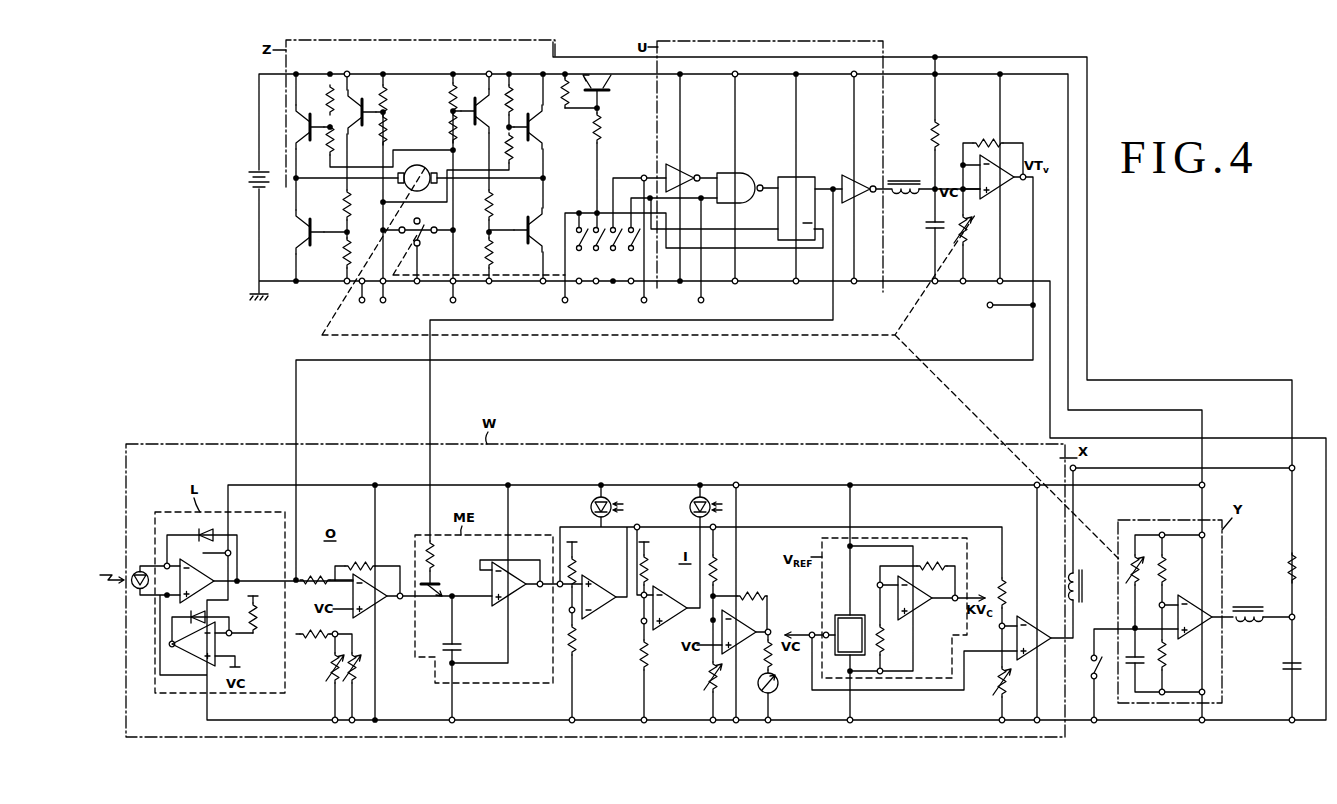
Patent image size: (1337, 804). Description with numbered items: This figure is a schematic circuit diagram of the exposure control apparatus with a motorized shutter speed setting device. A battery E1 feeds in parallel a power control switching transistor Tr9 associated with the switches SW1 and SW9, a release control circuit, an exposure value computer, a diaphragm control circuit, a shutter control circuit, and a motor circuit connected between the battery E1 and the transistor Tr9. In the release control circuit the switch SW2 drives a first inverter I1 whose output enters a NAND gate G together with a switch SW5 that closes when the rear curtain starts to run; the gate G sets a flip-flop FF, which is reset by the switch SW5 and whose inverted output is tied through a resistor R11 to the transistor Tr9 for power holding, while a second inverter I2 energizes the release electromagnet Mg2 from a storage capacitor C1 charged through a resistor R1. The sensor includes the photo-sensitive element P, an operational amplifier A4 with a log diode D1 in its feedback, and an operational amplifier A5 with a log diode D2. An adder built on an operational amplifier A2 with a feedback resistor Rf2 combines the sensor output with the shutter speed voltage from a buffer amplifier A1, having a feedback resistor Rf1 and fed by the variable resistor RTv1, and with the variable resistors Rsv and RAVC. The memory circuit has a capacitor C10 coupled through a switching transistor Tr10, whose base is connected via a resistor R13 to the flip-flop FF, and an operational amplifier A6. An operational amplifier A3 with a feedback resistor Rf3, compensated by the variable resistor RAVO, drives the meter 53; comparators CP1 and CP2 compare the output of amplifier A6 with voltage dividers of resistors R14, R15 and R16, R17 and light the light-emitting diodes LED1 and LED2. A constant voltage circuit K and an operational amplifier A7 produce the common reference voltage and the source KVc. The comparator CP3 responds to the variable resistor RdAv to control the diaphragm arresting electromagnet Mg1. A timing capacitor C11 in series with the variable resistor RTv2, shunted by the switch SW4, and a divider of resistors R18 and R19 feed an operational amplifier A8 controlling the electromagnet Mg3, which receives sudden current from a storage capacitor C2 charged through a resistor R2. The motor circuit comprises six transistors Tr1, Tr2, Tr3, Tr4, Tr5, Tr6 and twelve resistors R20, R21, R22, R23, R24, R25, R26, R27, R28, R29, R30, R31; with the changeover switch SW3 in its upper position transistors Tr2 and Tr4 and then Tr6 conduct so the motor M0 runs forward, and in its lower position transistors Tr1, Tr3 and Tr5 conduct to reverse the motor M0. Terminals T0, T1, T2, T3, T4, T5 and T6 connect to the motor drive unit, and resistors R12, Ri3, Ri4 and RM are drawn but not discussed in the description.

The meter 53 is at (778, 691).
The battery E1 is at (251, 179).
The transistor Tr1 is at (300, 124).
The transistor Tr2 is at (360, 126).
The transistor Tr3 is at (540, 228).
The transistor Tr4 is at (540, 135).
The transistor Tr5 is at (478, 125).
The transistor Tr6 is at (302, 231).
The power control switching transistor Tr9 is at (597, 82).
The switching transistor Tr10 is at (431, 601).
The resistor R1 is at (943, 135).
The charging resistor R2 is at (1301, 568).
The resistor R11 is at (609, 128).
The resistor R12 is at (565, 108).
The resistor R13 is at (442, 556).
The resistor R14 is at (584, 560).
The resistor R15 is at (584, 640).
The resistor R16 is at (656, 559).
The resistor R17 is at (656, 655).
The resistor R18 is at (1174, 570).
The resistor R19 is at (1174, 655).
The resistor R20 is at (318, 100).
The resistor R21 is at (318, 145).
The resistor R22 is at (335, 205).
The resistor R23 is at (335, 253).
The resistor R24 is at (395, 99).
The resistor R25 is at (395, 130).
The resistor R26 is at (442, 98).
The resistor R27 is at (442, 128).
The resistor R28 is at (501, 205).
The resistor R29 is at (501, 253).
The resistor R30 is at (521, 100).
The resistor R31 is at (521, 148).
The feedback resistor Rf1 is at (988, 134).
The feedback resistor Rf2 is at (360, 556).
The feedback resistor Rf3 is at (752, 588).
The input resistor Ri3 is at (723, 570).
The input resistor Ri4 is at (1012, 593).
The meter resistor RM is at (760, 655).
The variable resistor Rsv is at (322, 658).
The variable resistor RAVC is at (365, 674).
The variable resistor RAVO is at (702, 677).
The variable resistor RdAv is at (1015, 682).
The variable resistor RTv1 is at (977, 230).
The variable resistor RTv2 is at (1126, 562).
The storage capacitor C1 is at (928, 227).
The storage capacitor C2 is at (1298, 671).
The capacitor C10 is at (462, 650).
The timing capacitor C11 is at (1142, 664).
The motor M0 is at (422, 175).
The switch SW1 is at (583, 228).
The switch SW2 is at (613, 226).
The changeover switch SW3 is at (424, 237).
The switch SW4 is at (1083, 669).
The switch SW5 is at (637, 240).
The switch SW9 is at (578, 240).
The connection terminal T0 is at (357, 311).
The connection terminal T1 is at (391, 300).
The connection terminal T2 is at (446, 300).
The connection terminal T3 is at (573, 304).
The connection terminal T4 is at (652, 306).
The connection terminal T5 is at (694, 306).
The connection terminal T6 is at (983, 306).
The first inverter I1 is at (682, 172).
The second inverter I2 is at (856, 175).
The NAND gate G is at (747, 188).
The flip-flop FF is at (796, 177).
The diaphragm arresting electromagnet Mg1 is at (1092, 586).
The camera release control electromagnet Mg2 is at (900, 180).
The electromagnet Mg3 is at (1249, 602).
The buffer amplifier A1 is at (998, 175).
The operational amplifier A2 is at (378, 598).
The operational amplifier A3 is at (740, 627).
The operational amplifier A4 is at (197, 575).
The operational amplifier A5 is at (203, 655).
The operational amplifier A6 is at (510, 594).
The operational amplifier A7 is at (918, 608).
The operational amplifier A8 is at (1200, 610).
The first comparator CP1 is at (604, 595).
The second comparator CP2 is at (678, 604).
The comparator CP3 is at (1043, 632).
The photo-sensitive element P is at (133, 572).
The log diode D1 is at (198, 530).
The log diode D2 is at (199, 622).
The common battery source KVc is at (266, 610).
The light-emitting diode LED1 is at (606, 497).
The light-emitting diode LED2 is at (724, 504).
The constant voltage circuit K is at (850, 635).